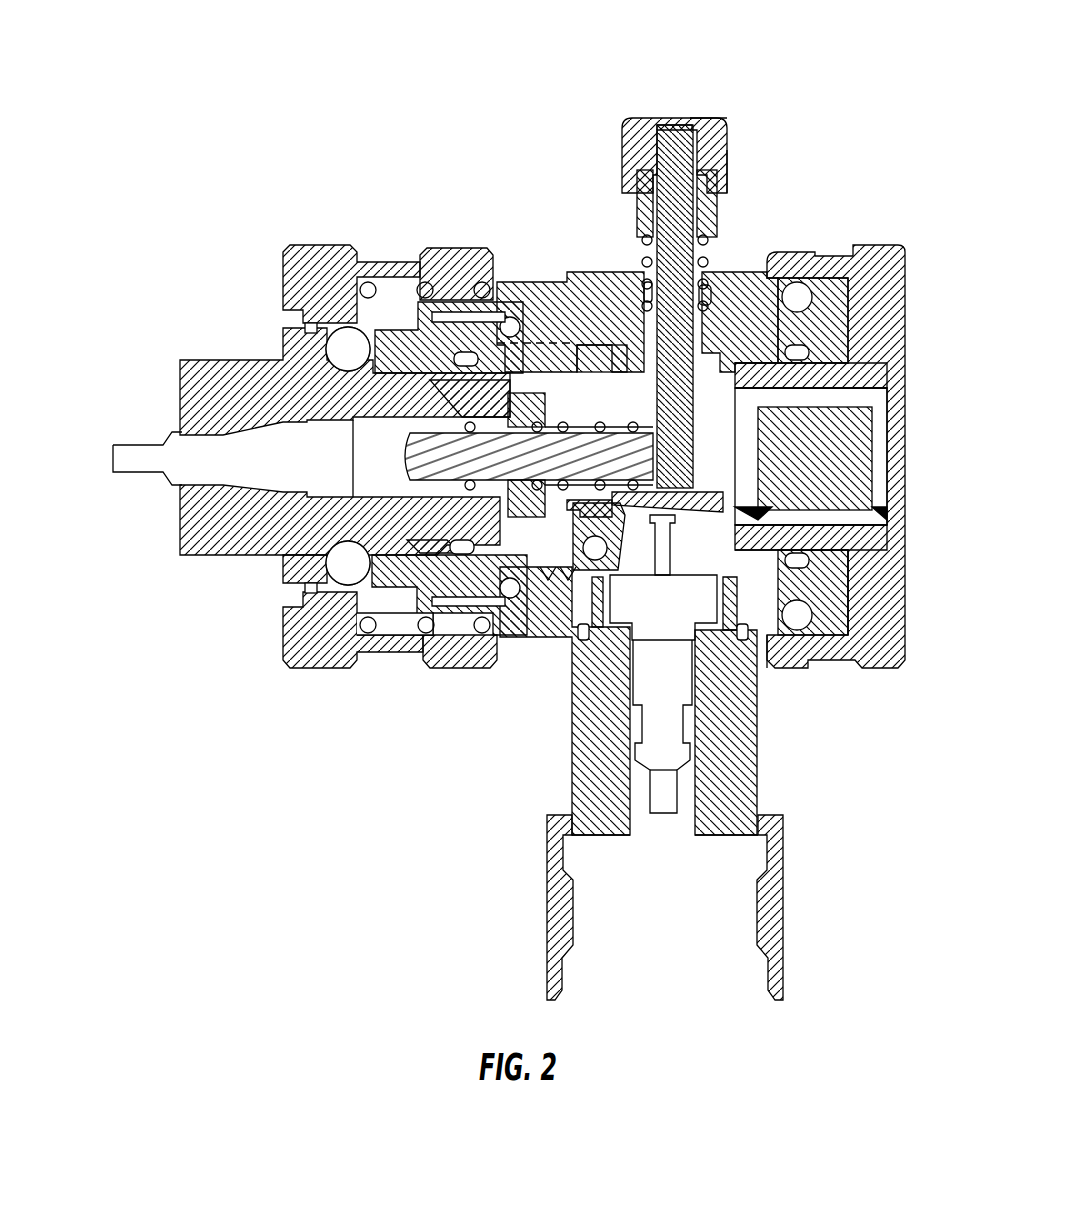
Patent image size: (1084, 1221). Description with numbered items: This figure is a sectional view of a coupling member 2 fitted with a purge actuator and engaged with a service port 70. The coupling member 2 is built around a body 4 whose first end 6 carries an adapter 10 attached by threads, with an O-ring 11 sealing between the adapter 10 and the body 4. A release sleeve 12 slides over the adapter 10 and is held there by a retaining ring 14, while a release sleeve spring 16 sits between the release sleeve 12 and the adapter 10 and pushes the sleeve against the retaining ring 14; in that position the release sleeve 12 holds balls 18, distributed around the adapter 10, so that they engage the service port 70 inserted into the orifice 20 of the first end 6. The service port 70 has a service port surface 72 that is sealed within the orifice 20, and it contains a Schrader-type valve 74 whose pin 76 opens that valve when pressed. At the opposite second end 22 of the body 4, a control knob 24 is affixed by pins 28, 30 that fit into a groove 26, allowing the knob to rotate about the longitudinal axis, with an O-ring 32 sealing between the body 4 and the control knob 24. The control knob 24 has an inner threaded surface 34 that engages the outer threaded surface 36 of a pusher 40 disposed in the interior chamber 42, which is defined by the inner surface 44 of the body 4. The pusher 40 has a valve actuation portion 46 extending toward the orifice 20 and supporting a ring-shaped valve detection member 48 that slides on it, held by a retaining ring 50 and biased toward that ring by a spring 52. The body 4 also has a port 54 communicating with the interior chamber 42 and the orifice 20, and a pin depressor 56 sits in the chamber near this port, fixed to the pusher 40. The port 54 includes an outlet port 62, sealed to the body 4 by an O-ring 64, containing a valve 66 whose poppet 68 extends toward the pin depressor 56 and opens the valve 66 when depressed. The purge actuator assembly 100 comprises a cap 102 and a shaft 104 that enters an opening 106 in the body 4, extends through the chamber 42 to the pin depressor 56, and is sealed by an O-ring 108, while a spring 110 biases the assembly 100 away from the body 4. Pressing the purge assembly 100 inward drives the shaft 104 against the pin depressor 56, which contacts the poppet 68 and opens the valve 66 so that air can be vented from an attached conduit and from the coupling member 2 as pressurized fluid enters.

The coupling member 2 is at (690, 38).
The body 4 is at (563, 278).
The first end 6 is at (410, 660).
The adapter 10 is at (283, 572).
The O-ring 11 is at (478, 300).
The release sleeve 12 is at (295, 248).
The retaining ring 14 is at (305, 600).
The release sleeve spring 16 is at (418, 282).
The balls 18 is at (338, 340).
The orifice 20 is at (283, 372).
The second end 22 is at (870, 630).
The control knob 24 is at (885, 650).
The groove 26 is at (878, 275).
The pin 28 is at (797, 290).
The pin 30 is at (802, 618).
The O-ring 32 is at (717, 598).
The inner threaded surface 34 is at (870, 385).
The outer threaded surface 36 is at (870, 505).
The pusher 40 is at (845, 445).
The interior chamber 42 is at (567, 410).
The inner surface 44 is at (461, 670).
The valve actuation portion 46 is at (465, 448).
The valve detection member 48 is at (436, 280).
The retaining ring 50 is at (410, 455).
The spring 52 is at (650, 532).
The port 54 is at (568, 632).
The pin depressor 56 is at (700, 488).
The outlet port 62 is at (790, 935).
The O-ring 64 is at (695, 655).
The valve 66 is at (690, 770).
The poppet 68 is at (745, 497).
The service port 70 is at (200, 372).
The service port surface 72 is at (470, 548).
The Schrader-type valve 74 is at (125, 445).
The pin 76 is at (283, 345).
The purge actuator assembly 100 is at (735, 150).
The cap 102 is at (703, 118).
The shaft 104 is at (640, 232).
The opening 106 is at (712, 258).
The O-ring 108 is at (712, 290).
The spring 110 is at (723, 185).